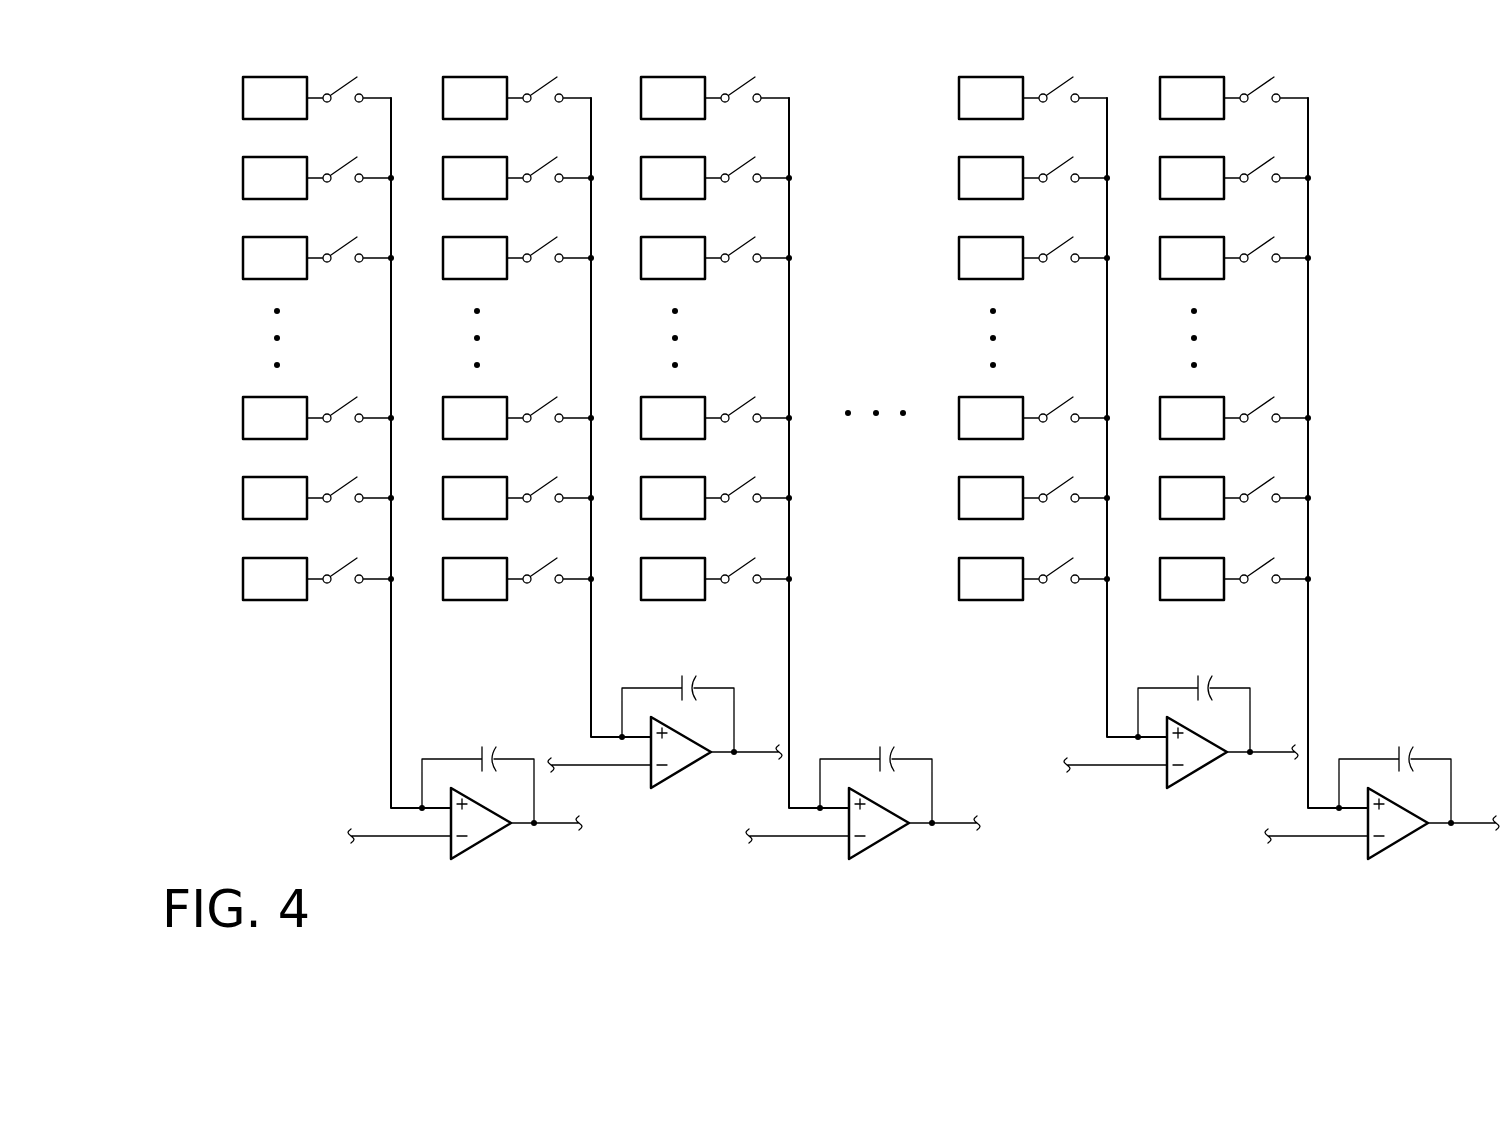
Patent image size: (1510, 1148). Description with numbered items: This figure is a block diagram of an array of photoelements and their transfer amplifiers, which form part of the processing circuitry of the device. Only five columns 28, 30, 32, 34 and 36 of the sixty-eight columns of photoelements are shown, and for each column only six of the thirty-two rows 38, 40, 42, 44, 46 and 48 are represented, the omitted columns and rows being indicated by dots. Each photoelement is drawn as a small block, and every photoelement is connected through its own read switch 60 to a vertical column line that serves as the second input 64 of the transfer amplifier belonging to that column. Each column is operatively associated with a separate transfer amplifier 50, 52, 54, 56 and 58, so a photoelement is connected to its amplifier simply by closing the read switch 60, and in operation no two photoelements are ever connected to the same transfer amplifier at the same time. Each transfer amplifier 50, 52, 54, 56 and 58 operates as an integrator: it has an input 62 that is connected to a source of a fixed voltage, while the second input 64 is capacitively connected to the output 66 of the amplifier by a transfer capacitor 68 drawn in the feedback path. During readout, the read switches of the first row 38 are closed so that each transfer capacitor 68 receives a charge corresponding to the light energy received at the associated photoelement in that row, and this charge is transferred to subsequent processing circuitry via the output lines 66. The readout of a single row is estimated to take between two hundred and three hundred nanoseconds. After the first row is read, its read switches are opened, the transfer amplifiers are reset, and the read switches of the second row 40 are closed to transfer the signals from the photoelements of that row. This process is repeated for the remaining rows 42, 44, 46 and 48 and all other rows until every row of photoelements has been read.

The column of photoelements 28 is at (276, 610).
The column of photoelements 30 is at (473, 610).
The column of photoelements 32 is at (700, 610).
The column of photoelements 34 is at (1000, 610).
The column of photoelements 36 is at (1222, 610).
The first row of photoelements 38 is at (1327, 98).
The second row of photoelements 40 is at (1327, 178).
The row of photoelements 42 is at (1327, 258).
The row of photoelements 44 is at (1327, 418).
The row of photoelements 46 is at (1327, 498).
The row of photoelements 48 is at (1327, 579).
The transfer amplifier 50 is at (481, 841).
The transfer amplifier 52 is at (681, 770).
The transfer amplifier 54 is at (879, 841).
The transfer amplifier 56 is at (1197, 770).
The transfer amplifier 58 is at (1398, 841).
The read switch 60 is at (1258, 86).
The input 62 is at (1317, 838).
The second input 64 is at (1345, 674).
The output 66 is at (1465, 838).
The transfer capacitor 68 is at (935, 735).